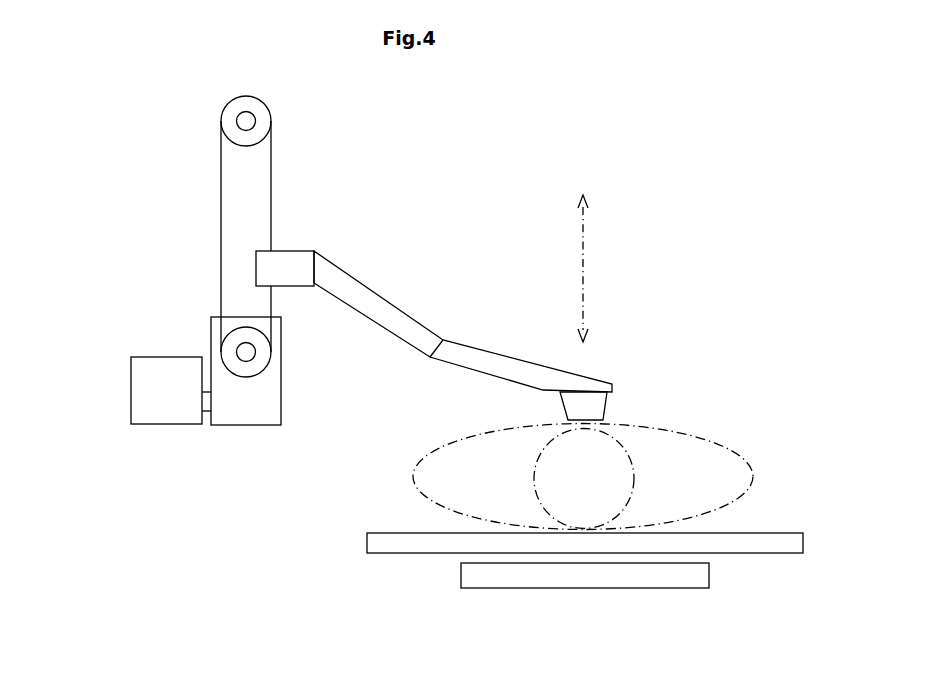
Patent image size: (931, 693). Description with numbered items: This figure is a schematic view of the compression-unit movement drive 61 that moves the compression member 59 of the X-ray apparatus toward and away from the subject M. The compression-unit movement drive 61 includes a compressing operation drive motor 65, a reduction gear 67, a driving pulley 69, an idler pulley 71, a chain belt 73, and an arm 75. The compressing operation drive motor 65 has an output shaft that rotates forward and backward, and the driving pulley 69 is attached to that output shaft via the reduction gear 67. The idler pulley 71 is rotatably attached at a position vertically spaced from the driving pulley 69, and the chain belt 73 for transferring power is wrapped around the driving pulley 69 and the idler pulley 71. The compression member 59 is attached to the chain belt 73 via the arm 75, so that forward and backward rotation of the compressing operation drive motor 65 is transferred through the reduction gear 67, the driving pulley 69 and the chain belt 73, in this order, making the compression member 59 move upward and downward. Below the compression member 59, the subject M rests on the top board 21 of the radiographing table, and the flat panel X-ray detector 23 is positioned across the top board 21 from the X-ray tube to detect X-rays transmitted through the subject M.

The compression-unit movement drive 61 is at (136, 220).
The idler pulley 71 is at (228, 137).
The chain belt 73 is at (221, 230).
The driving pulley 69 is at (262, 362).
The reduction gear 67 is at (245, 421).
The compressing operation drive motor 65 is at (167, 422).
The arm 75 is at (378, 308).
The compression member 59 is at (590, 404).
The subject M is at (457, 440).
The top board 21 is at (391, 547).
The flat panel X-ray detector 23 is at (580, 584).